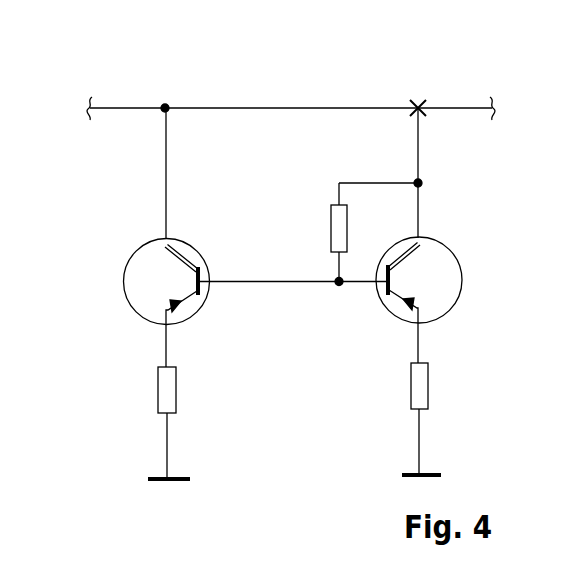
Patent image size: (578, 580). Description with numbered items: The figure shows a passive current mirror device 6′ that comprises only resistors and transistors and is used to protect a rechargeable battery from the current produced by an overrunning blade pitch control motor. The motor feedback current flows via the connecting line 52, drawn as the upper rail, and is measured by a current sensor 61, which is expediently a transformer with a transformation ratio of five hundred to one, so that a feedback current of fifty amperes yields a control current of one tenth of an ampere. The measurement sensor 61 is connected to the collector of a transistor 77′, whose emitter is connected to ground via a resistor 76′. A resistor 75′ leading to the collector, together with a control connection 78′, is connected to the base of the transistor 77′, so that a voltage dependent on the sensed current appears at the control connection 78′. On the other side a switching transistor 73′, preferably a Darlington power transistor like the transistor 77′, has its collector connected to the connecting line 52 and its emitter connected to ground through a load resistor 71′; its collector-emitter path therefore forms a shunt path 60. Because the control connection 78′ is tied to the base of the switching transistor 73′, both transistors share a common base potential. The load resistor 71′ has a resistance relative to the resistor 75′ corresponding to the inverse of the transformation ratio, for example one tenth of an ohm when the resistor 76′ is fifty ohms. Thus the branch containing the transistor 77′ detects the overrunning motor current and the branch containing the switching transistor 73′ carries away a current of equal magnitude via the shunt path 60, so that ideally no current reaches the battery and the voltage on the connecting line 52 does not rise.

The connecting line 52 is at (240, 108).
The current sensor 61 is at (418, 100).
The shunt path 60 is at (166, 180).
The switching transistor 73′ is at (190, 241).
The resistor 75′ is at (331, 232).
The transistor 77′ is at (455, 252).
The control connection 78′ is at (278, 283).
The load resistor 71′ is at (177, 388).
The resistor 76′ is at (429, 383).
The passive current mirror device 6′ is at (139, 345).